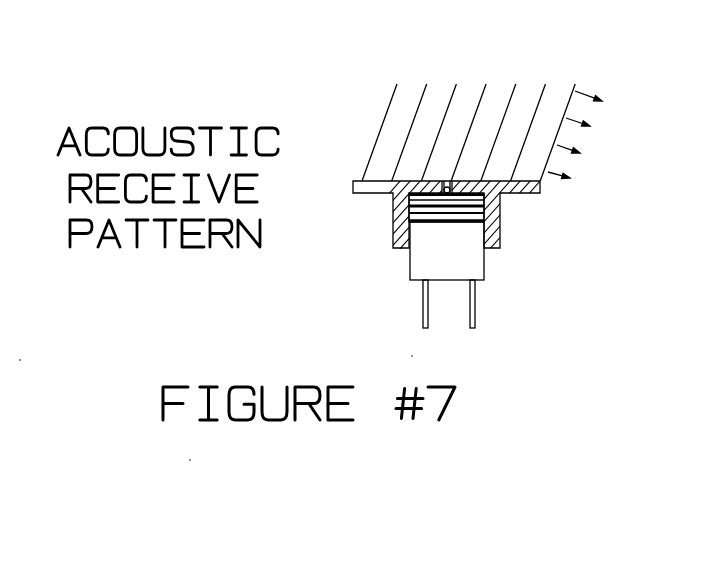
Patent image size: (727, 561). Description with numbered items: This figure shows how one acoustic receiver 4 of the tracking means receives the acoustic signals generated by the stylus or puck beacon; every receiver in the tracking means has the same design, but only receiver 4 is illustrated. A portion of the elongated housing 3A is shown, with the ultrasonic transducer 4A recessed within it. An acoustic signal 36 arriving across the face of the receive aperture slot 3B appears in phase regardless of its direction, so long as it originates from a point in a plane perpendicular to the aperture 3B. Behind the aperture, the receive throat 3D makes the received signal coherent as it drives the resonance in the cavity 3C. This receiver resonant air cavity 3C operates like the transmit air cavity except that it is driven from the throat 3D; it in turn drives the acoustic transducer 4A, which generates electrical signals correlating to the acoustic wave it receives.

The acoustic signal 36 is at (332, 102).
The receiver 4 is at (415, 60).
The aperture 3B is at (548, 74).
The throat 3D is at (467, 193).
The cavity 3C is at (480, 210).
The housing 3A is at (330, 252).
The ultrasonic transducer 4A is at (437, 259).